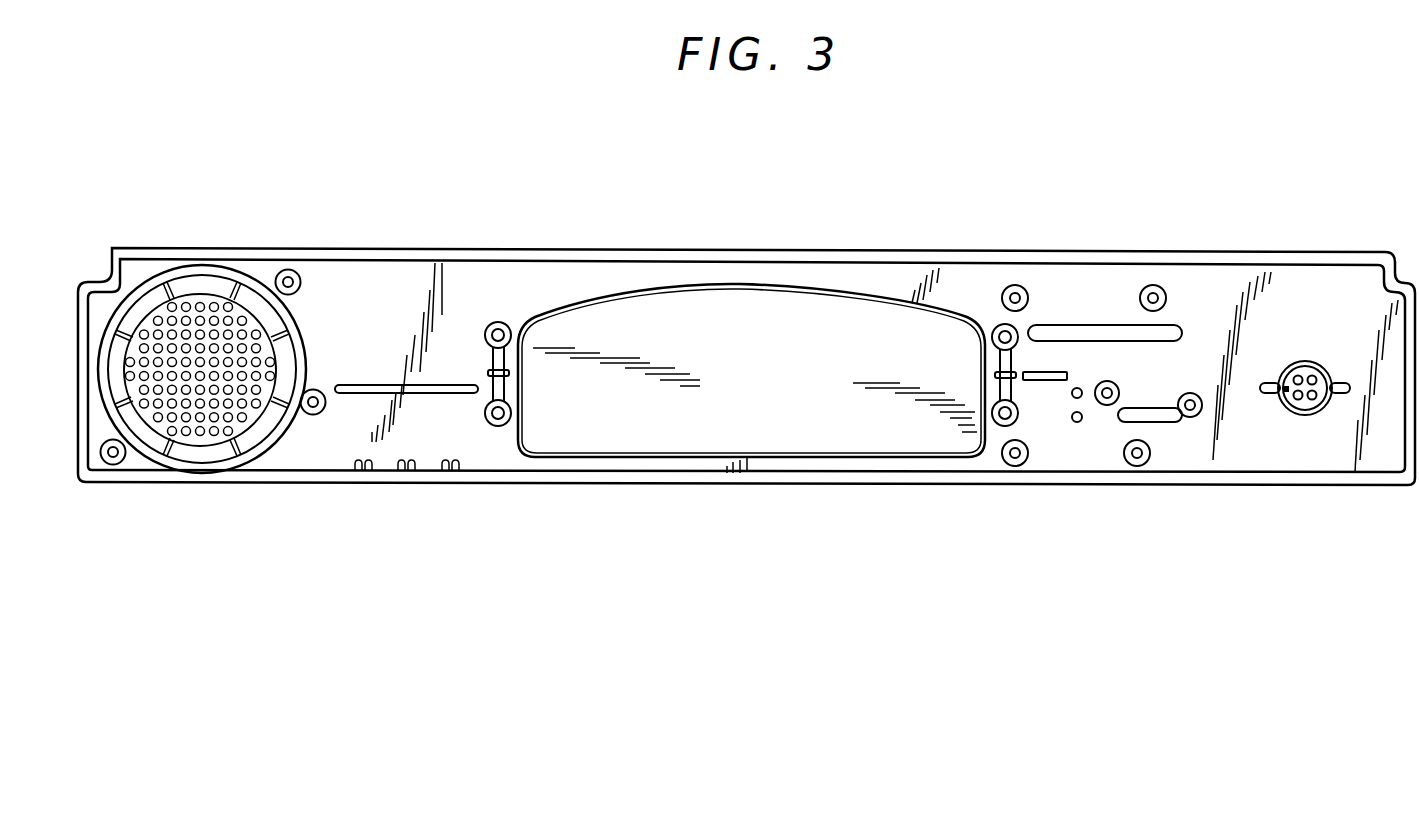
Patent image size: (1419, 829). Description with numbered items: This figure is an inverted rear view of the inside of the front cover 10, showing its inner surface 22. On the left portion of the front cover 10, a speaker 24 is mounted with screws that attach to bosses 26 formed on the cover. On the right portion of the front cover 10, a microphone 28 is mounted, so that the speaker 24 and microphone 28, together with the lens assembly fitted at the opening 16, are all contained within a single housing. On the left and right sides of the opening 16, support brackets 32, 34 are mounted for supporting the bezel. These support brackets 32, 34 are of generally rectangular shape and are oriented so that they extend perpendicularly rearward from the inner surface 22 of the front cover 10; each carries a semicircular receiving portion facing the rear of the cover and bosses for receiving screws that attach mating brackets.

The front cover 10 is at (1287, 250).
The opening 16 is at (903, 296).
The inner surface 22 is at (369, 316).
The speaker 24 is at (258, 276).
The bosses 26 is at (304, 278).
The microphone 28 is at (1313, 424).
The support bracket 32 is at (507, 316).
The support bracket 34 is at (997, 316).